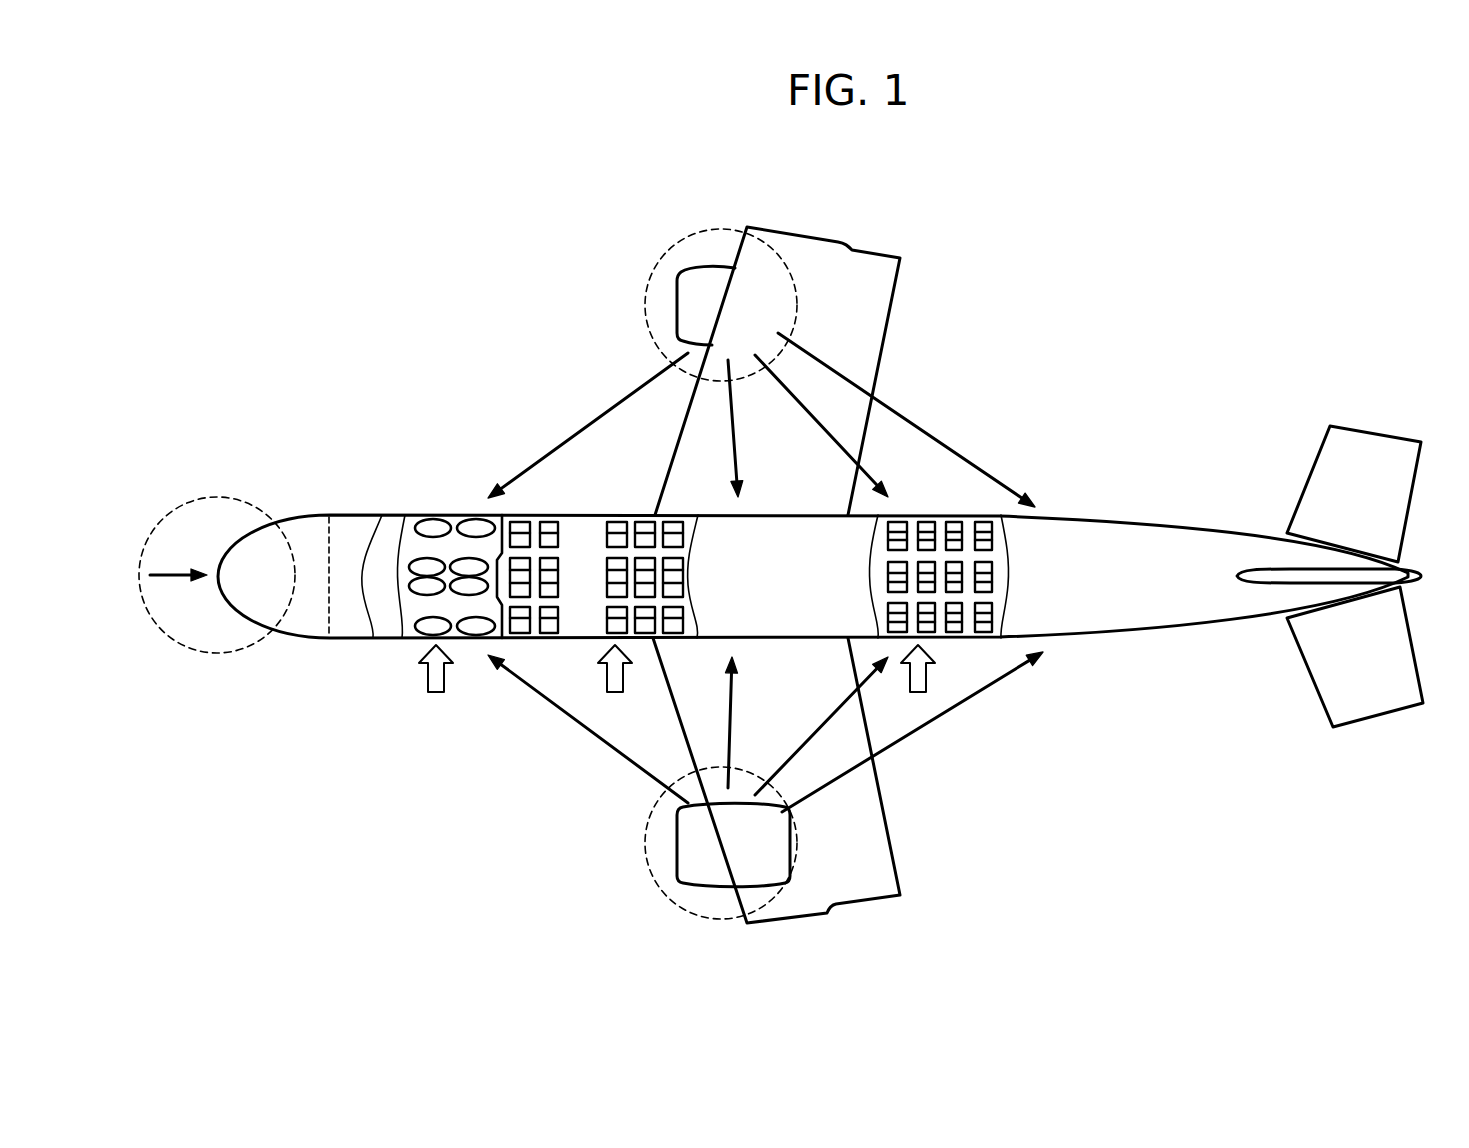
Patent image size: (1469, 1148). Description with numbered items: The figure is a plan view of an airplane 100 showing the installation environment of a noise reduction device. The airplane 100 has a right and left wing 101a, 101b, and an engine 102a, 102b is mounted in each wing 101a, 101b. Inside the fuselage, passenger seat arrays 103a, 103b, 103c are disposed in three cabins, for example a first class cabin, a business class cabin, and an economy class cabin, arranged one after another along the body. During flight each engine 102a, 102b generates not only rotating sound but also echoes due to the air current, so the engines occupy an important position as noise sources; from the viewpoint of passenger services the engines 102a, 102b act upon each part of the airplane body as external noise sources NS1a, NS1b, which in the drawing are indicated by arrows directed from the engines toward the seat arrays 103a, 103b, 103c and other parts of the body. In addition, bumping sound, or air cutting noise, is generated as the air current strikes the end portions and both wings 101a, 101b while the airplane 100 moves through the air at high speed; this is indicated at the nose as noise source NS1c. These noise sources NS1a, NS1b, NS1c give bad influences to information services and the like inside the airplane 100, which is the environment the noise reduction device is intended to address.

The airplane 100 is at (432, 510).
The wing 101a is at (867, 837).
The wing 101b is at (877, 322).
The engine 102a is at (688, 848).
The engine 102b is at (687, 298).
The passenger seat array 103a is at (418, 590).
The passenger seat array 103b is at (672, 572).
The passenger seat array 103c is at (1000, 565).
The noise source NS1a is at (647, 815).
The noise source NS1b is at (700, 233).
The noise source NS1c is at (242, 643).